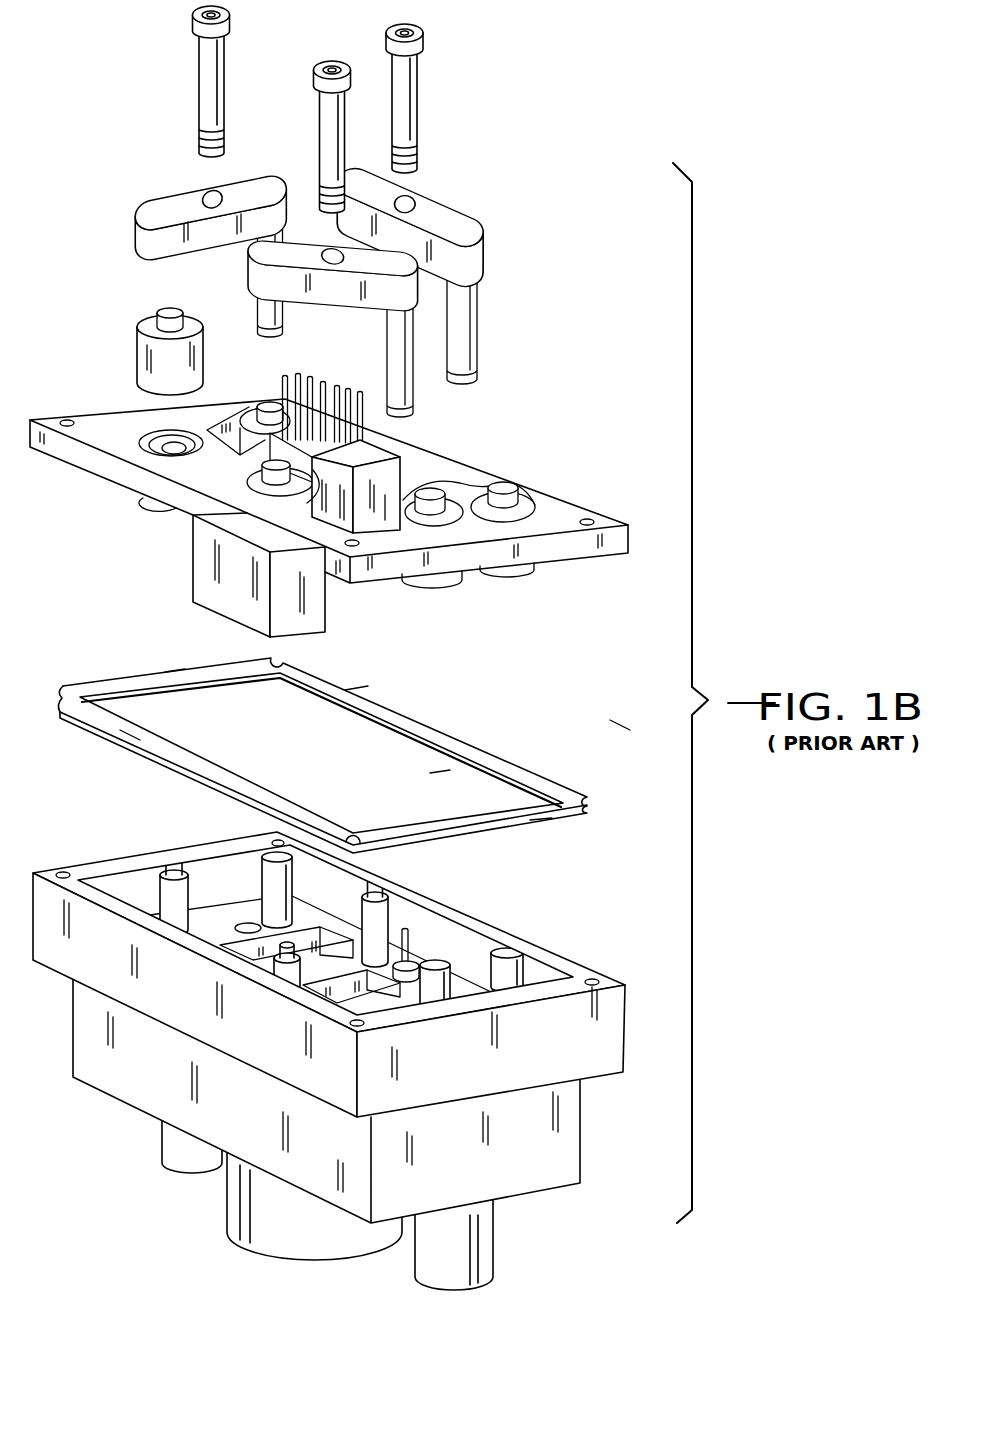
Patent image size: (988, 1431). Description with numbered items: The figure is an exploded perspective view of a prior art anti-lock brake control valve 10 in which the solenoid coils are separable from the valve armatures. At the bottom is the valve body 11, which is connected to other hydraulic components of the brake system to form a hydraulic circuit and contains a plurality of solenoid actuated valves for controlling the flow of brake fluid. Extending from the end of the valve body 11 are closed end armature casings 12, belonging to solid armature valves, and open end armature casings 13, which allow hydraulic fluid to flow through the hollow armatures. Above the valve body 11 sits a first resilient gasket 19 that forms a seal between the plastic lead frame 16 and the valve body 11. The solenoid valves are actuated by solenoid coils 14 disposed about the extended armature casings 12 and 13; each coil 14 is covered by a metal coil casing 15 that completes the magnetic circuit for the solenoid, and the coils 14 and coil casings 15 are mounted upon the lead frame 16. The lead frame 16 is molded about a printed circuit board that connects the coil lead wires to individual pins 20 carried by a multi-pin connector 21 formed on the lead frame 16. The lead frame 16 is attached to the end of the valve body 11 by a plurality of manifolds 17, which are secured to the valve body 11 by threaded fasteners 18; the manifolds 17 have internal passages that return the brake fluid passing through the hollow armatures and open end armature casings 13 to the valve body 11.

The control valve 10 is at (522, 108).
The valve body 11 is at (339, 1039).
The closed end armature casing 12 is at (273, 880).
The open end armature casing 13 is at (158, 884).
The solenoid coil 14 is at (153, 502).
The coil casing 15 is at (146, 326).
The lead frame 16 is at (557, 513).
The manifold 17 is at (162, 207).
The threaded fastener 18 is at (228, 56).
The first resilient gasket 19 is at (567, 787).
The pin 20 is at (297, 380).
The multi-pin connector 21 is at (311, 500).